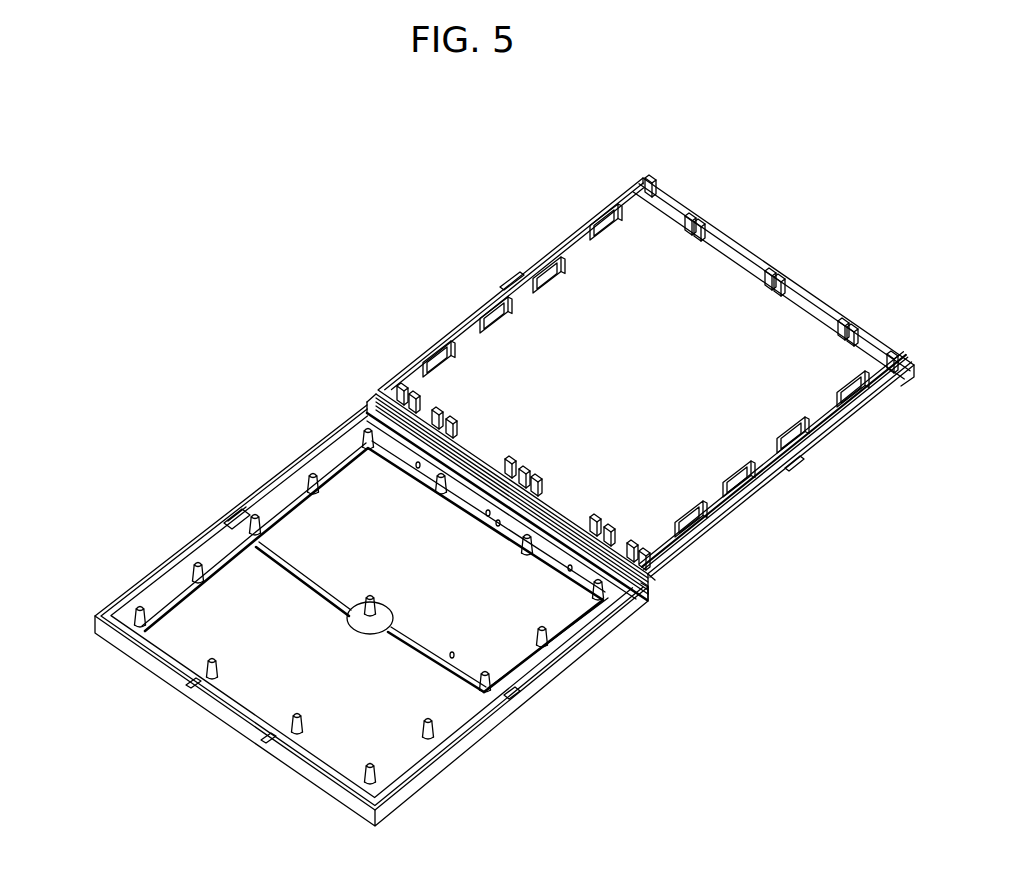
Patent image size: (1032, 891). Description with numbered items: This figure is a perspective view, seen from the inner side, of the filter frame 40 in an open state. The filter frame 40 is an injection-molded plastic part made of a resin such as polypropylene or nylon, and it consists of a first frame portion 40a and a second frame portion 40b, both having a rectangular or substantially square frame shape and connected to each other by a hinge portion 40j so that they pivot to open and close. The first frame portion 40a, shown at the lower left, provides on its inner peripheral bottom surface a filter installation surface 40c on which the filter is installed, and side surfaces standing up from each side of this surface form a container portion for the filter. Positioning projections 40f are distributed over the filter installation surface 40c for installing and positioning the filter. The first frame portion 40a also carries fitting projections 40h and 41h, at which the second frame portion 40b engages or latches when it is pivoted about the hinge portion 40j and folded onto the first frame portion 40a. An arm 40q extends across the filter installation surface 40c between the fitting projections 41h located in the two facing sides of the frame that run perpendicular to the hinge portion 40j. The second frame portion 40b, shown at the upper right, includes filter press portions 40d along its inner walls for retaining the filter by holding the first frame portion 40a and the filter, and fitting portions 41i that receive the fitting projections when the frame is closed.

The filter frame 40 is at (272, 404).
The first frame portion 40a is at (93, 614).
The second frame portion 40b is at (812, 291).
The filter installation surface 40c is at (616, 601).
The filter press portions 40d is at (597, 212).
The positioning projections 40f is at (141, 620).
The fitting projections 40h is at (192, 679).
The hinge portion 40j is at (650, 578).
The arm 40q is at (278, 553).
The fitting projections 41h is at (268, 513).
The fitting portions 41i is at (526, 287).